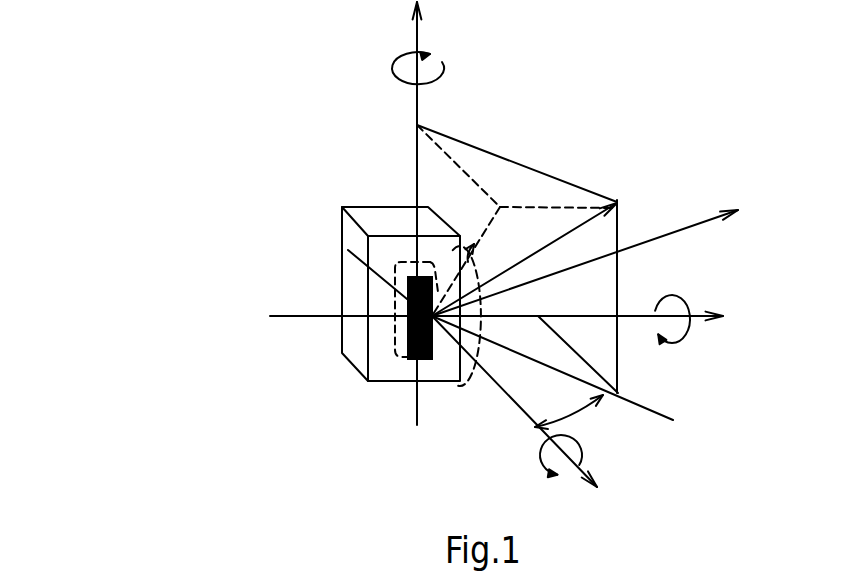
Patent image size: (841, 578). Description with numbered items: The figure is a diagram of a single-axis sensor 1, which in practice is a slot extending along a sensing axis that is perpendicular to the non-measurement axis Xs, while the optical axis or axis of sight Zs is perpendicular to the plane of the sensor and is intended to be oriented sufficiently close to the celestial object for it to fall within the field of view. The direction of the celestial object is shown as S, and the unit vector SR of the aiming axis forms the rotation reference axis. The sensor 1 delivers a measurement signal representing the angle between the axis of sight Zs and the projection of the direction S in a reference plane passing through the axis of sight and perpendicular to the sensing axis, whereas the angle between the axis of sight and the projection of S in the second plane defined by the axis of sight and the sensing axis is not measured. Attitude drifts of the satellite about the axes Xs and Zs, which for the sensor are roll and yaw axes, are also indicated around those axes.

The single-axis sensor 1 is at (350, 364).
The direction of the celestial object S is at (532, 259).
The unit vector of the aiming axis SR is at (773, 170).
The non-measurement axis Xs is at (513, 319).
The optical axis Zs is at (532, 411).